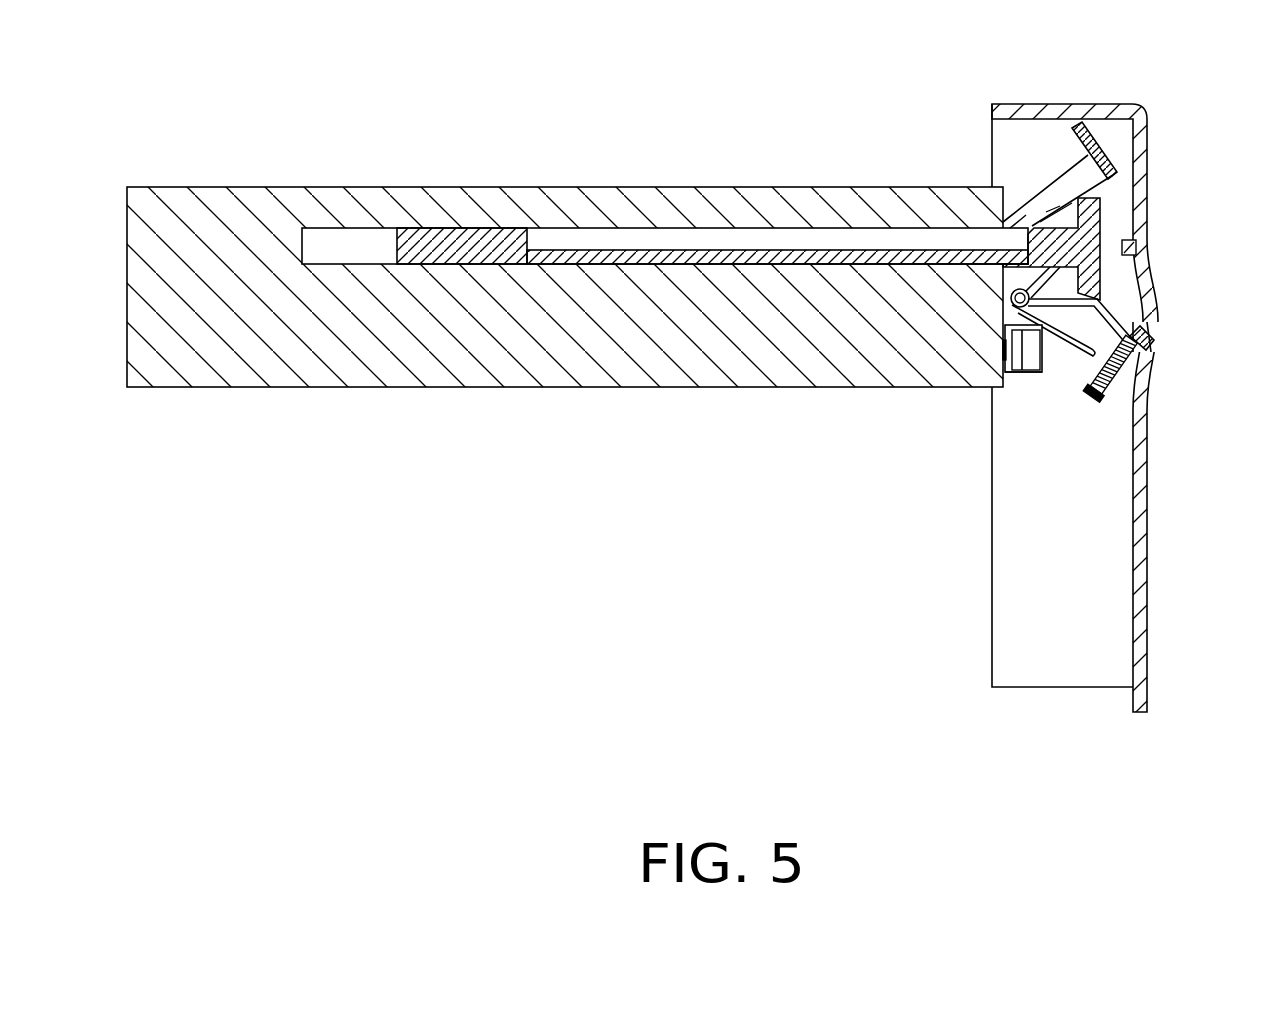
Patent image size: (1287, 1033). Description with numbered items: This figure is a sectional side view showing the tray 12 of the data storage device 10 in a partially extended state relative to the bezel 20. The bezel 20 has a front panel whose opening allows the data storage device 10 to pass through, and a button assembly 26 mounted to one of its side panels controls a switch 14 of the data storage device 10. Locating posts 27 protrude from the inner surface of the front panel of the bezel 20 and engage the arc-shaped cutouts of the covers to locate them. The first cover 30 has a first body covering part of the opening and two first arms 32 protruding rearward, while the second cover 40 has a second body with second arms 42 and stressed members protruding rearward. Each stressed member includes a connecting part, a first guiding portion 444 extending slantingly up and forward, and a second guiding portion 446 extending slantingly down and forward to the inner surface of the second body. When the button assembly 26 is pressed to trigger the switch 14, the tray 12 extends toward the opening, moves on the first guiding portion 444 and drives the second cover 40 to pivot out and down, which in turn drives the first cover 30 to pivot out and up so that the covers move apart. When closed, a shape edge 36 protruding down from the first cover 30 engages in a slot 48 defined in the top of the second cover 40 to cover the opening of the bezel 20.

The data storage device 10 is at (237, 203).
The tray 12 is at (516, 247).
The switch 14 is at (1010, 365).
The bezel 20 is at (1049, 107).
The button assembly 26 is at (1025, 358).
The locating posts 27 is at (1137, 246).
The first cover 30 is at (1114, 151).
The first arms 32 is at (1063, 183).
The shape edge 36 is at (1082, 197).
The second cover 40 is at (1112, 401).
The second arms 42 is at (1146, 328).
The first guiding portion 444 is at (1097, 278).
The second guiding portion 446 is at (1113, 318).
The slot 48 is at (1143, 328).